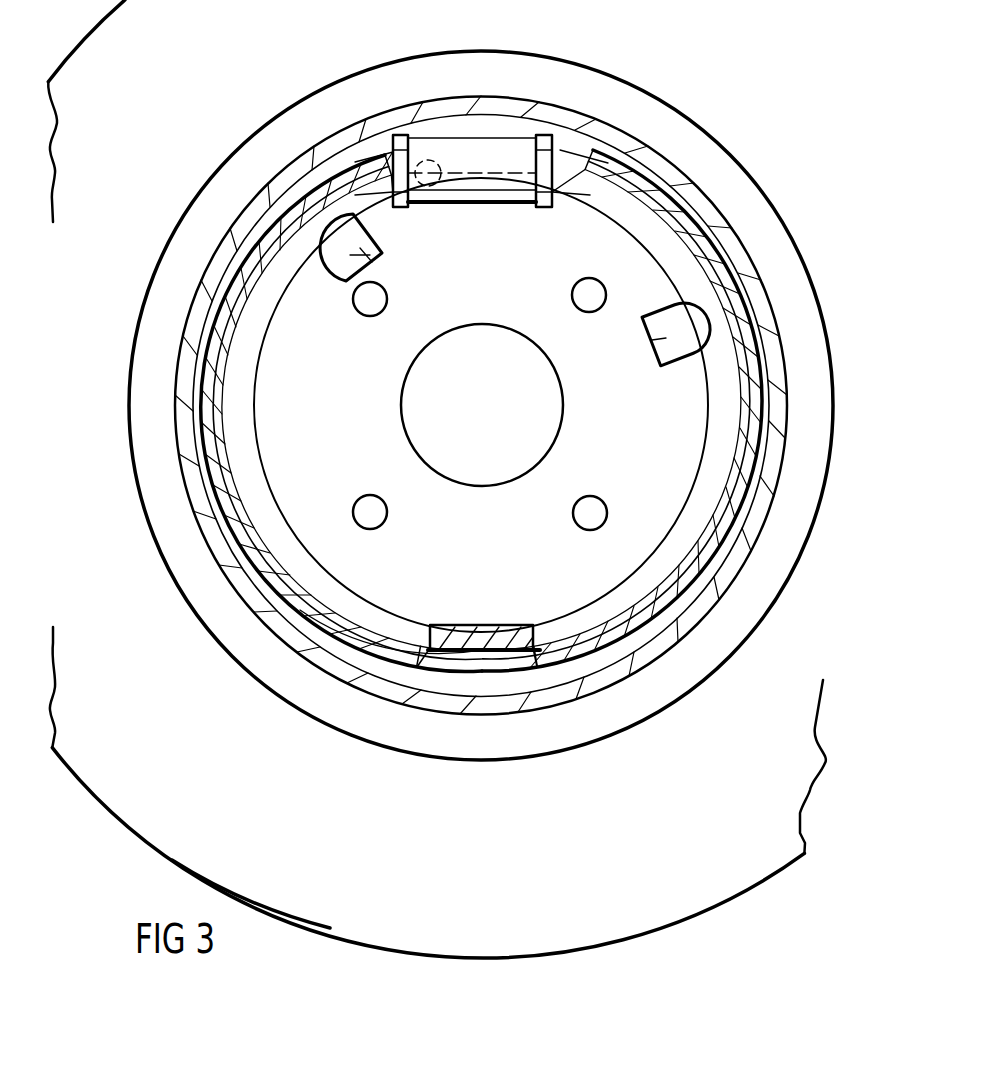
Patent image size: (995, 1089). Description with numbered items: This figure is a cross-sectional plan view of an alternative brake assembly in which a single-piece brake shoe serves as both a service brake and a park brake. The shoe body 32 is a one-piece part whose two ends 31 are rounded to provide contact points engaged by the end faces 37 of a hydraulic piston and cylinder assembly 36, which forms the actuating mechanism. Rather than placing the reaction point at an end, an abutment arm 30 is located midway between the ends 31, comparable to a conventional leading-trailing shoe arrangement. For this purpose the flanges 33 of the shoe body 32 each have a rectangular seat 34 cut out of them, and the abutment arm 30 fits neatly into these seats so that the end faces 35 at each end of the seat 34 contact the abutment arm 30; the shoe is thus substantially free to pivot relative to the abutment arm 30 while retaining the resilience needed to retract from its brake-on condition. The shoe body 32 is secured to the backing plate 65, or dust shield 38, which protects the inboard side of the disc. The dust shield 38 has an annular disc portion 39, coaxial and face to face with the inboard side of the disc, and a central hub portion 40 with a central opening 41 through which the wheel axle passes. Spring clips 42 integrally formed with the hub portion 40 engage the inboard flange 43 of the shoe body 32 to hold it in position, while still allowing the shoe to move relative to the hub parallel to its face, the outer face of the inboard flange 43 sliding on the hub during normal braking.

The abutment arm 30 is at (453, 640).
The ends of the shoe body 31 is at (380, 175).
The shoe body 32 is at (383, 635).
The flanges 33 is at (257, 510).
The rectangular seat 34 is at (497, 655).
The end faces 35 is at (418, 637).
The hydraulic piston and cylinder assembly 36 is at (478, 155).
The end faces of the piston and cylinder assembly 37 is at (375, 140).
The dust shield 38 is at (395, 910).
The annular disc portion 39 is at (310, 905).
The central hub portion 40 is at (318, 535).
The central opening 41 is at (540, 430).
The spring clips 42 is at (372, 259).
The inboard flange 43 is at (760, 530).
The backing plate 65 is at (346, 426).